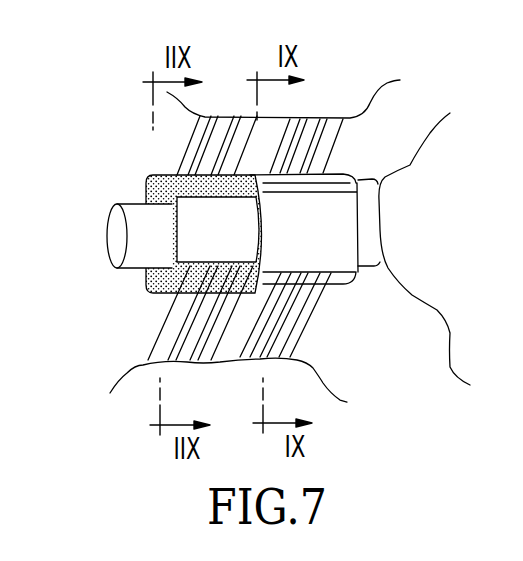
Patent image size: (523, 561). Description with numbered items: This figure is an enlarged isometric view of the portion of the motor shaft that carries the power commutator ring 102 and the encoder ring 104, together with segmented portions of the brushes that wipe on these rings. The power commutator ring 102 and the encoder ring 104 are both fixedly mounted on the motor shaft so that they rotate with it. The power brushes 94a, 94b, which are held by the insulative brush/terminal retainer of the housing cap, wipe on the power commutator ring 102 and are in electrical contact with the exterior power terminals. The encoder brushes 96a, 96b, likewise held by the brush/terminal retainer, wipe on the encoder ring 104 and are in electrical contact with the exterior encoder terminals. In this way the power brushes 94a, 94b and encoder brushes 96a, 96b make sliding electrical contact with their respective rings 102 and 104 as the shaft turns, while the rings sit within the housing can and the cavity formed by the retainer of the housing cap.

The power brush 94a is at (333, 148).
The power brush 94b is at (308, 325).
The encoder brush 96a is at (183, 158).
The encoder brush 96b is at (157, 332).
The power commutator ring 102 is at (380, 180).
The encoder ring 104 is at (147, 178).